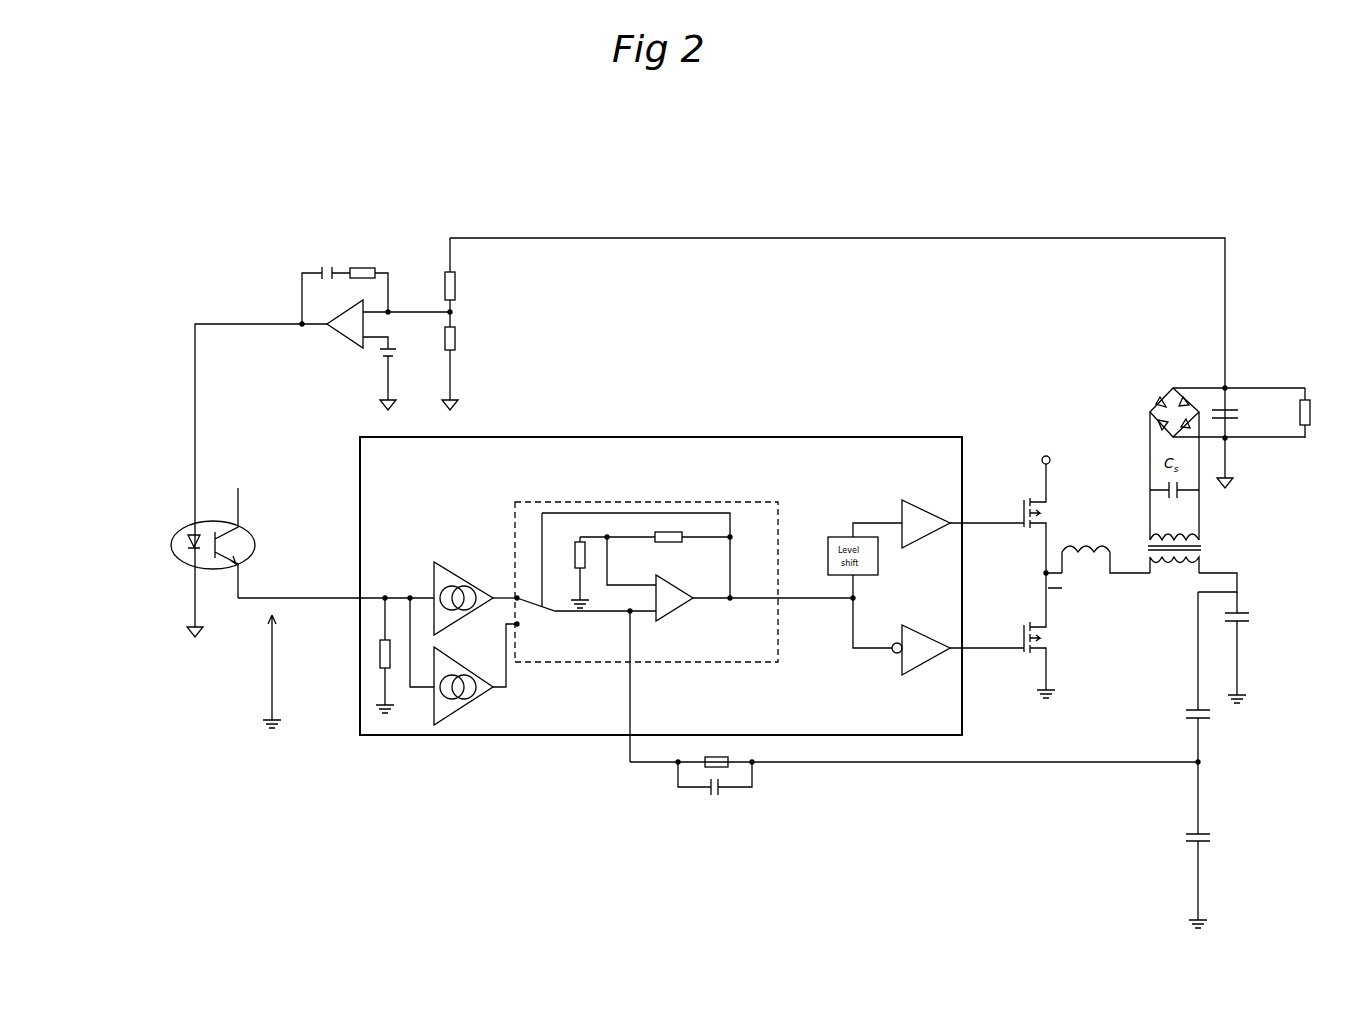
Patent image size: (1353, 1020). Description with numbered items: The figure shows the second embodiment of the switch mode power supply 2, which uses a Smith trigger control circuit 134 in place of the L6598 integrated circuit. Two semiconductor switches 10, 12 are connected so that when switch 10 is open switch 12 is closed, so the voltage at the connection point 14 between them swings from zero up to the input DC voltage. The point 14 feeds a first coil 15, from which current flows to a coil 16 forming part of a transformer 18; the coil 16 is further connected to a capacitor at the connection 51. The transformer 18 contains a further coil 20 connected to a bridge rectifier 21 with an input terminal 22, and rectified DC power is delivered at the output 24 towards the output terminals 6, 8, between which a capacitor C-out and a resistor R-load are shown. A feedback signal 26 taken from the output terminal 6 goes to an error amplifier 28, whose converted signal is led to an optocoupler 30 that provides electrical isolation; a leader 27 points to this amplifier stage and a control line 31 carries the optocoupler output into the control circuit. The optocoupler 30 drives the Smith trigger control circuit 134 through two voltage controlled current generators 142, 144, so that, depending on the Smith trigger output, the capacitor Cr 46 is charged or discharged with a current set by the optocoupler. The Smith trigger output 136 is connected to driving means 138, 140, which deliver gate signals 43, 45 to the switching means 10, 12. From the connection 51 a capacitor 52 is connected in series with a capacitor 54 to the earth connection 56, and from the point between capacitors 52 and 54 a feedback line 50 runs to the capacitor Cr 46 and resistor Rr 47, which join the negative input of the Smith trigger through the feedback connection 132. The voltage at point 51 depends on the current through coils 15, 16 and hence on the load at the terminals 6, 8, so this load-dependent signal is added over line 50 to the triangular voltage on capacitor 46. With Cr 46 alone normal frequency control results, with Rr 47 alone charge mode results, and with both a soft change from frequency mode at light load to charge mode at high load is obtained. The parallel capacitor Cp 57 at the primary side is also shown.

The switch mode power supply 2 is at (740, 411).
The output terminal 6 is at (1239, 366).
The output terminal 8 is at (1239, 458).
The semiconductor switch 10 is at (1018, 528).
The semiconductor switch 12 is at (1031, 660).
The connection point 14 is at (1060, 593).
The first coil 15 is at (1106, 530).
The coil 16 is at (1173, 583).
The transformer 18 is at (1212, 556).
The coil 20 is at (1174, 524).
The bridge rectifier 21 is at (1154, 394).
The input terminal 22 is at (1273, 374).
The output 24 is at (1179, 391).
The feedback signal 26 is at (841, 350).
The error amplifier 27 is at (318, 452).
The error amplifier 28 is at (428, 324).
The optocoupler 30 is at (213, 521).
The control signal line 31 is at (336, 648).
The high-side gate drive signal 43 is at (987, 539).
The low-side gate drive signal 45 is at (987, 637).
The capacitor Cr 46 is at (728, 801).
The resistor Rr 47 is at (729, 752).
The feedback line 50 is at (915, 781).
The connection point 51 is at (1229, 564).
The capacitor 52 is at (1167, 677).
The capacitor 54 is at (1200, 841).
The earth connection 56 is at (1215, 906).
The parallel capacitor Cp 57 is at (1281, 647).
The feedback connection 132 is at (608, 686).
The Smith trigger control circuit 134 is at (646, 568).
The Smith trigger output 136 is at (741, 598).
The driving means 138 is at (921, 664).
The driving means 140 is at (926, 512).
The voltage controlled current generator 142 is at (483, 674).
The voltage controlled current generator 144 is at (474, 576).